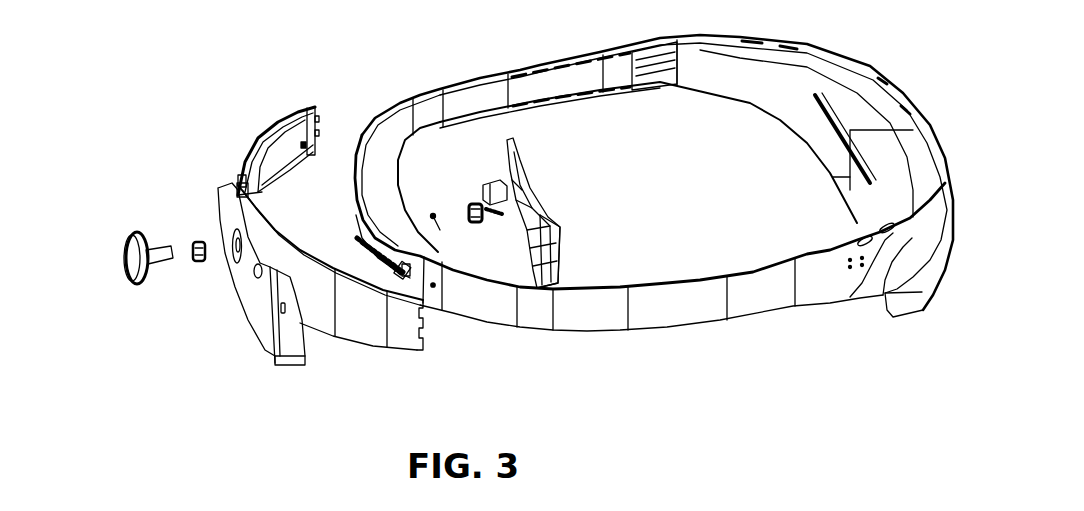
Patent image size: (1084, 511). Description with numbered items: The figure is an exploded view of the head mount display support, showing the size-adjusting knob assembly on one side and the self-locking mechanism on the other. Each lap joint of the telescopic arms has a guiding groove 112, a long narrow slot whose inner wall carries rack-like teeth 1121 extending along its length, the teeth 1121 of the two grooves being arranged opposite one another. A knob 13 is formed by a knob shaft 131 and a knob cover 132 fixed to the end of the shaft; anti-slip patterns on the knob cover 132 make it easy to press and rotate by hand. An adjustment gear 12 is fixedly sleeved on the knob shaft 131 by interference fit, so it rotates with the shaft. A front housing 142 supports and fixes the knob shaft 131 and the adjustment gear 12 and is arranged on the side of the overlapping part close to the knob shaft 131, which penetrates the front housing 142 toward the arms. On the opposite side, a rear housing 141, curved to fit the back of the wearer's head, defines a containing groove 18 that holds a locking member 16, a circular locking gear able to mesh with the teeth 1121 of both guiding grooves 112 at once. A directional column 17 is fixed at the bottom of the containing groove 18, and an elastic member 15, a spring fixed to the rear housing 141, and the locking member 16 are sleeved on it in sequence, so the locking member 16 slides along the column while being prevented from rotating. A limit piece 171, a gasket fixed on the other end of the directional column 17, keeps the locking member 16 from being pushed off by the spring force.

The guiding groove 112 is at (360, 252).
The teeth 1121 is at (350, 210).
The adjustment gear 12 is at (200, 262).
The knob 13 is at (114, 247).
The knob shaft 131 is at (163, 250).
The knob cover 132 is at (140, 283).
The rear housing 141 is at (558, 222).
The front housing 142 is at (258, 320).
The elastic member 15 is at (486, 200).
The locking member 16 is at (477, 225).
The directional column 17 is at (540, 275).
The limit piece 171 is at (437, 224).
The containing groove 18 is at (490, 185).